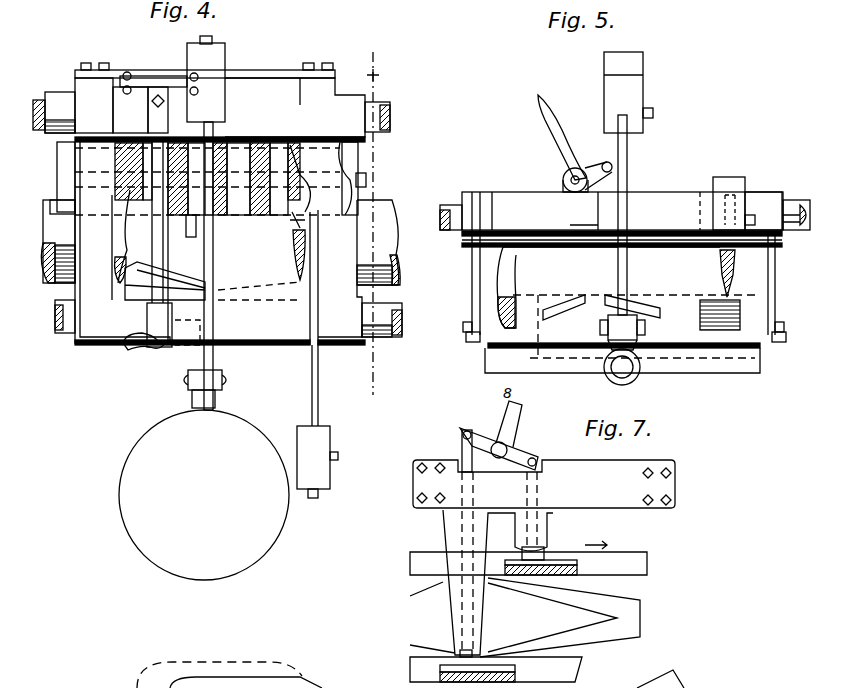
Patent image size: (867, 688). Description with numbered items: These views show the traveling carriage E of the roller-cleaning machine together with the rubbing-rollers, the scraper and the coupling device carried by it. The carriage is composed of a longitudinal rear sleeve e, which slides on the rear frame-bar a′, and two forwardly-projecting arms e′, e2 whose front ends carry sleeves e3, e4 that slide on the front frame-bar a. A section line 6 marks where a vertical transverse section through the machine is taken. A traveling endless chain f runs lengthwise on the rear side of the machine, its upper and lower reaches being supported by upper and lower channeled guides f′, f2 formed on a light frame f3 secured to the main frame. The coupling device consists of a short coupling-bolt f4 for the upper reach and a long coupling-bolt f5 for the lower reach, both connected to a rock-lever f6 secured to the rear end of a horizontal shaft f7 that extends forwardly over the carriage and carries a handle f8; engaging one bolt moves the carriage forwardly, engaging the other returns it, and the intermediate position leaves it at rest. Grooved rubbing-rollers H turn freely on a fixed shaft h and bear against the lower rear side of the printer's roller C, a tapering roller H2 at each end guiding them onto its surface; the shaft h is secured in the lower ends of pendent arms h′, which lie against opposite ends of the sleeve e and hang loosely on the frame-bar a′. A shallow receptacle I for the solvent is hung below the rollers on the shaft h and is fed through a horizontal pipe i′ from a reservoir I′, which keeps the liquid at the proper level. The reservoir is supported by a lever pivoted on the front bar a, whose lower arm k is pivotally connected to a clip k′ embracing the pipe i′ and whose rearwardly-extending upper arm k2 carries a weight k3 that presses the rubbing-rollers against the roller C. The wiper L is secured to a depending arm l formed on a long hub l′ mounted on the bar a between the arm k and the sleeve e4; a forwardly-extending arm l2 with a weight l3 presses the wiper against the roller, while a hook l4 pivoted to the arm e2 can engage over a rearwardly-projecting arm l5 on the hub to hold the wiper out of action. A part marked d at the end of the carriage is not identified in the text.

In FIG. 4, the rock-lever f6 is at (141, 84).
In FIG. 5, the rock-lever f6 is at (585, 176).
In FIG. 7, the rock-lever f6 is at (515, 452).
In FIG. 4, the weight k3 is at (225, 55).
In FIG. 5, the weight k3 is at (652, 62).
In FIG. 4, the feed mechanism E is at (268, 45).
In FIG. 5, the feed mechanism E is at (494, 171).
In FIG. 4, the rear sleeve e is at (295, 107).
In FIG. 4, the rear frame-bar a′ is at (388, 117).
In FIG. 4, the rubbing-rollers H is at (207, 179).
In FIG. 4, the tapering roller H2 is at (114, 162).
In FIG. 5, the tapering roller H2 is at (720, 320).
In FIG. 4, the pendent arms h′ is at (57, 152).
In FIG. 5, the pendent arms h′ is at (472, 290).
In FIG. 4, the fixed shaft h is at (366, 180).
In FIG. 5, the fixed shaft h is at (786, 337).
In FIG. 4, the forwardly-projecting arm e′ is at (111, 245).
In FIG. 4, the upper lever-arm k2 is at (213, 235).
In FIG. 5, the upper lever-arm k2 is at (629, 162).
In FIG. 4, the horizontal shaft f7 is at (190, 230).
In FIG. 5, the horizontal shaft f7 is at (578, 192).
In FIG. 7, the horizontal shaft f7 is at (498, 458).
In FIG. 4, the wiper L is at (184, 274).
In FIG. 5, the wiper L is at (601, 316).
In FIG. 4, the solvent receptacle I is at (282, 240).
In FIG. 5, the solvent receptacle I is at (622, 372).
In FIG. 4, the hook l4 is at (306, 218).
In FIG. 5, the hook l4 is at (712, 195).
In FIG. 4, the rearwardly-projecting arm l5 is at (318, 242).
In FIG. 4, the front sleeve e3 is at (142, 325).
In FIG. 5, the front sleeve e3 is at (622, 211).
In FIG. 4, the long hub l′ is at (259, 305).
In FIG. 5, the long hub l′ is at (684, 211).
In FIG. 4, the forwardly-projecting arm e2 is at (340, 268).
In FIG. 4, the printer's roller C is at (378, 242).
In FIG. 5, the printer's roller C is at (616, 285).
In FIG. 4, the front sleeve e4 is at (341, 326).
In FIG. 5, the front sleeve e4 is at (777, 210).
In FIG. 4, the front frame-bar a is at (229, 318).
In FIG. 5, the front frame-bar a is at (483, 207).
In FIG. 4, the section line 6 is at (372, 216).
In FIG. 4, the handle f8 is at (140, 350).
In FIG. 5, the handle f8 is at (562, 137).
In FIG. 7, the handle f8 is at (505, 422).
In FIG. 4, the horizontal pipe i′ is at (190, 350).
In FIG. 5, the horizontal pipe i′ is at (637, 375).
In FIG. 4, the lower lever-arm k is at (215, 356).
In FIG. 5, the lower lever-arm k is at (618, 268).
In FIG. 4, the clip k′ is at (217, 392).
In FIG. 5, the clip k′ is at (640, 336).
In FIG. 4, the reservoir I′ is at (204, 495).
In FIG. 4, the forwardly-extending arm l2 is at (323, 385).
In FIG. 5, the forwardly-extending arm l2 is at (735, 250).
In FIG. 4, the weight l3 is at (317, 462).
In FIG. 5, the weight l3 is at (734, 191).
In FIG. 5, the shaft d is at (444, 215).
In FIG. 5, the wiper-arm l is at (630, 252).
In FIG. 5, the long coupling-bolt f5 is at (610, 180).
In FIG. 7, the long coupling-bolt f5 is at (455, 650).
In FIG. 7, the short coupling-bolt f4 is at (545, 555).
In FIG. 7, the endless chain f is at (565, 565).
In FIG. 7, the upper channeled guide f′ is at (538, 564).
In FIG. 7, the light frame f3 is at (542, 617).
In FIG. 7, the lower channeled guide f2 is at (508, 668).